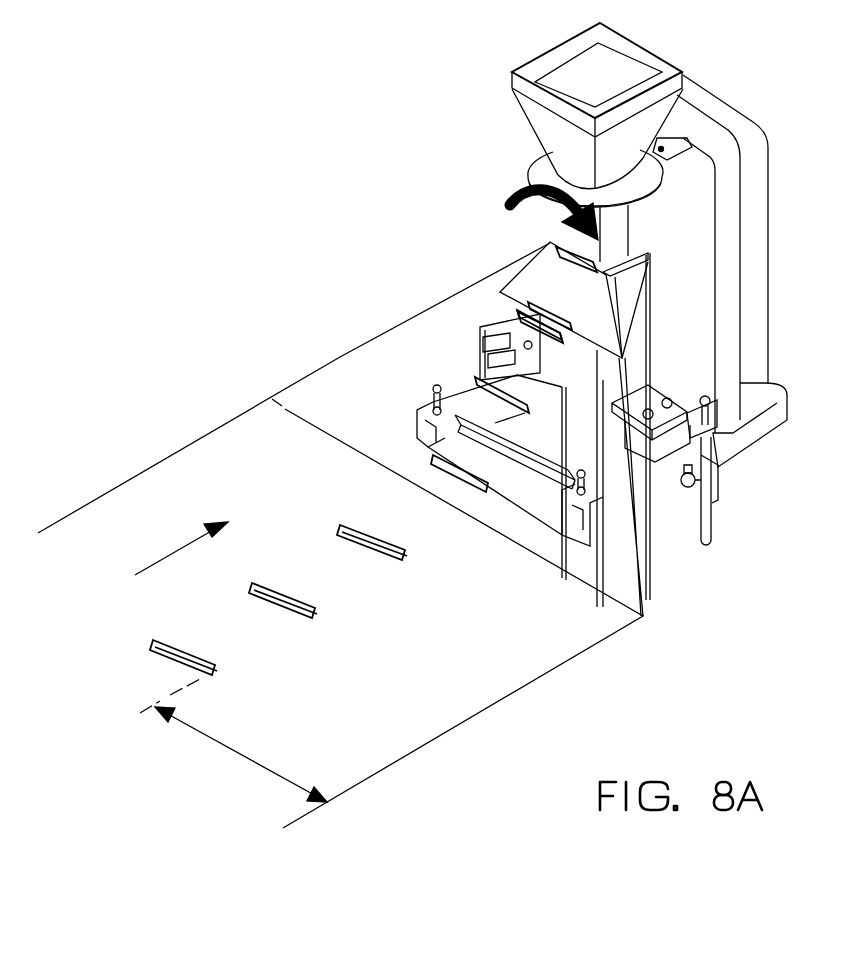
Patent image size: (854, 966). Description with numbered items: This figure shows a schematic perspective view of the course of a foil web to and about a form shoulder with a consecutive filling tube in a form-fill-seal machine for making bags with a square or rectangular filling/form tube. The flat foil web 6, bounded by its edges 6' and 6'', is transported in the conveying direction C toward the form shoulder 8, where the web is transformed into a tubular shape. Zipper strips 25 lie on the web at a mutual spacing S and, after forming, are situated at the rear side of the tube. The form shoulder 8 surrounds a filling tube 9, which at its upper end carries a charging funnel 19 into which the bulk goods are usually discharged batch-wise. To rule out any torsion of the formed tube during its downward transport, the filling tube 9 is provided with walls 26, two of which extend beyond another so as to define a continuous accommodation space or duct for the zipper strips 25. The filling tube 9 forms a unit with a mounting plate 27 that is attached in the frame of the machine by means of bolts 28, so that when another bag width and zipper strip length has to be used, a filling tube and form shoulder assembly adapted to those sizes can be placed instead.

The charging funnel 19 is at (643, 57).
The filling tube 9 is at (627, 227).
The form shoulder 8 is at (578, 307).
The mounting plate 27 is at (483, 328).
The bolts 28 is at (513, 327).
The walls of the filling tube 26 is at (590, 452).
The zipper strip 25 is at (283, 607).
The foil web 6 is at (340, 535).
The belt front edge 6' is at (465, 751).
The belt rear edge 6'' is at (128, 438).
The strip spacing S is at (241, 754).
The conveying direction C is at (181, 548).